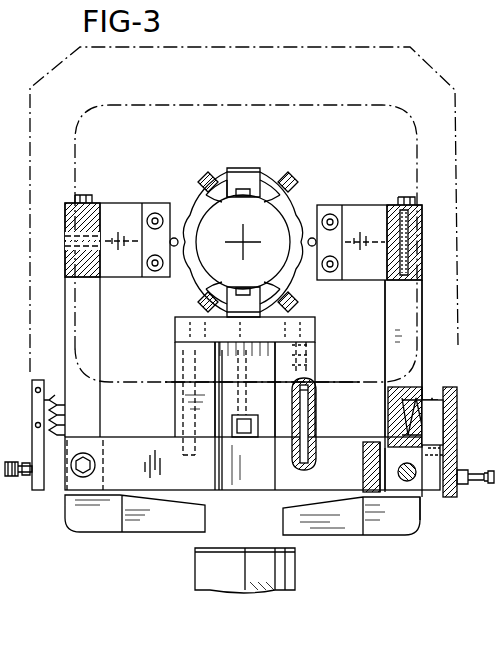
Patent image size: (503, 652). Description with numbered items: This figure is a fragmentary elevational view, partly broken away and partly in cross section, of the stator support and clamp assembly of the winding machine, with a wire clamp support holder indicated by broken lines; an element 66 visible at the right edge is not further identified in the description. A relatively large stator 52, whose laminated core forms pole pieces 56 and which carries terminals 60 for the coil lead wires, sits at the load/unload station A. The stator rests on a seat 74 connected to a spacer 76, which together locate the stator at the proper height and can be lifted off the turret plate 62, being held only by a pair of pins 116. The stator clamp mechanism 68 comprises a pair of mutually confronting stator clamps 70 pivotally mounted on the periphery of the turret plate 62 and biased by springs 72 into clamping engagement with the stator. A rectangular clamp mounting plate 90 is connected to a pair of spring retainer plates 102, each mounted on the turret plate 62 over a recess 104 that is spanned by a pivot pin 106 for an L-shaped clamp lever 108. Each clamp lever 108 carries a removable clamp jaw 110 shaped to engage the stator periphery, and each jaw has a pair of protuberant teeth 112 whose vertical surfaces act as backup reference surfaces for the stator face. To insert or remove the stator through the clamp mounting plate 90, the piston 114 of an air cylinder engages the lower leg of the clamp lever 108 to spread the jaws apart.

The clamp mounting plate 90 is at (287, 46).
The stator clamp mechanism 68 is at (430, 170).
The housing wall 66 is at (496, 155).
The stator 52 is at (229, 172).
The load/unload station A is at (248, 144).
The terminals 60 is at (200, 185).
The protuberant teeth 112 is at (178, 205).
The pole pieces 56 is at (288, 190).
The stator clamp 70 is at (368, 206).
The seat 74 is at (176, 328).
The spacer 76 is at (176, 360).
The clamp jaw 110 is at (368, 283).
The pins 116 is at (320, 388).
The springs 72 is at (65, 408).
The spring retainer plate 102 is at (452, 408).
The pivot pin 106 is at (400, 464).
The recess 104 is at (363, 478).
The turret plate 62 is at (205, 492).
The L-shaped clamp lever 108 is at (417, 522).
The piston 114 is at (200, 582).